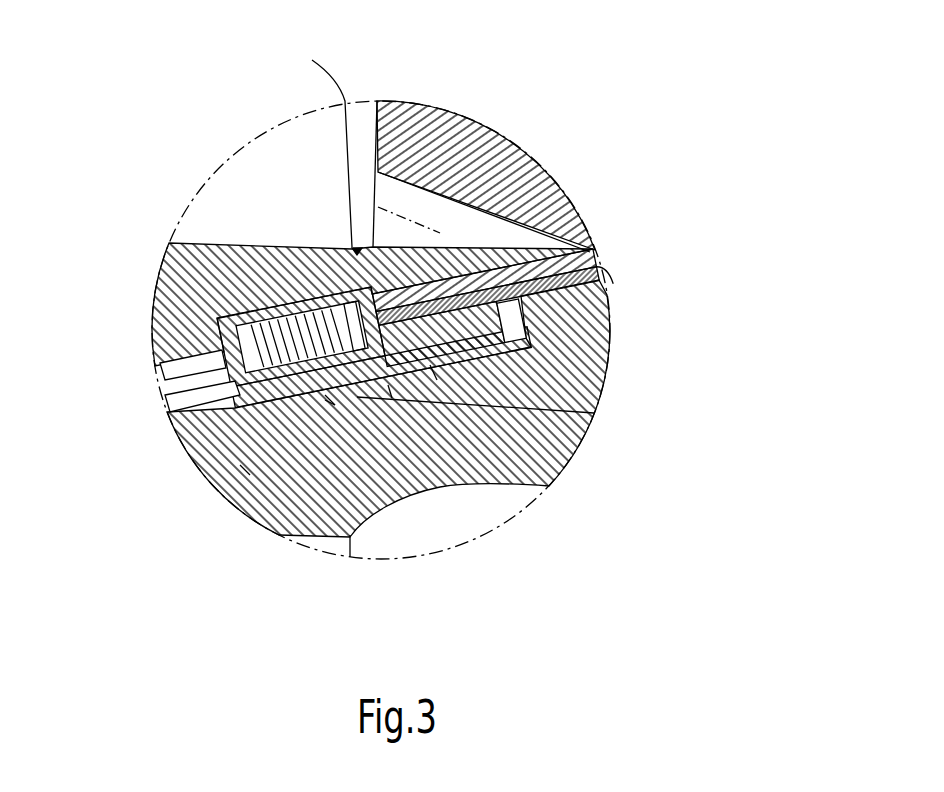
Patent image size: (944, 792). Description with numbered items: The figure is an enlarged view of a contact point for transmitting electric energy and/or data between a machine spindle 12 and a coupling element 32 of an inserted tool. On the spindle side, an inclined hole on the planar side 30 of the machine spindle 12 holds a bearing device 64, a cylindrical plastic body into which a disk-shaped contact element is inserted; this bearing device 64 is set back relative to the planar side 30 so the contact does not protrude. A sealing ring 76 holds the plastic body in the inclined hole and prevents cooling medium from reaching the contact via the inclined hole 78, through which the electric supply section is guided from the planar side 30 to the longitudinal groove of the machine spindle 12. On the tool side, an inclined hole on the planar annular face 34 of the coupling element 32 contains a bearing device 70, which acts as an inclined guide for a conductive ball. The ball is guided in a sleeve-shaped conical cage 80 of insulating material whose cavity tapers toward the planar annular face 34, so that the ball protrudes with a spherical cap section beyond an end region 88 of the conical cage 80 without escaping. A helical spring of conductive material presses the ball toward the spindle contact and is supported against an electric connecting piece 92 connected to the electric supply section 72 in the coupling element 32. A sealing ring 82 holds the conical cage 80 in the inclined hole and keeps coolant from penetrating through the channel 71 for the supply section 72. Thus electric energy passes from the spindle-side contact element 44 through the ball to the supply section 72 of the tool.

The machine spindle 12 is at (470, 112).
The planar side 30 is at (380, 100).
The planar annular face 34 is at (318, 141).
The inclined hole 78 is at (445, 222).
The bearing device 64 is at (468, 296).
The end region 88 is at (480, 415).
The sealing ring 76 is at (549, 486).
The contact element 44 is at (433, 370).
The conical cage 80 is at (391, 385).
The sealing ring 82 is at (330, 400).
The coupling element 32 is at (245, 470).
The bearing device 70 is at (330, 402).
The electric supply section 72 is at (200, 400).
The channel 71 is at (185, 376).
The electric connecting piece 92 is at (195, 345).